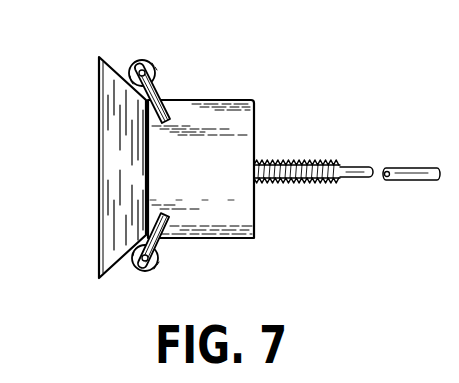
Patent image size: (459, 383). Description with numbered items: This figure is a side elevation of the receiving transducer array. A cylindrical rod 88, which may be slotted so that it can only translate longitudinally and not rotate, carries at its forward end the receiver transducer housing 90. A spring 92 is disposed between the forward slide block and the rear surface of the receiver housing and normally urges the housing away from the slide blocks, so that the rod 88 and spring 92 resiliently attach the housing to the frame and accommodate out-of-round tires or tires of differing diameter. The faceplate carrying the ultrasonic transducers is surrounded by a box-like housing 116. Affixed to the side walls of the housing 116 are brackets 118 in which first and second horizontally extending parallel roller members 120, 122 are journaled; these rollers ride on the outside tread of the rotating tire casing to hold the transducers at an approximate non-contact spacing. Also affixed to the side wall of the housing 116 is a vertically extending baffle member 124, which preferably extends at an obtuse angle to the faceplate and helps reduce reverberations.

The cylindrical rod 88 is at (397, 181).
The receiver transducer housing 90 is at (240, 100).
The spring 92 is at (293, 163).
The box-like housing 116 is at (243, 218).
The brackets 118 is at (162, 93).
The first roller member 120 is at (148, 61).
The second roller member 122 is at (152, 271).
The first baffle member 124 is at (99, 182).